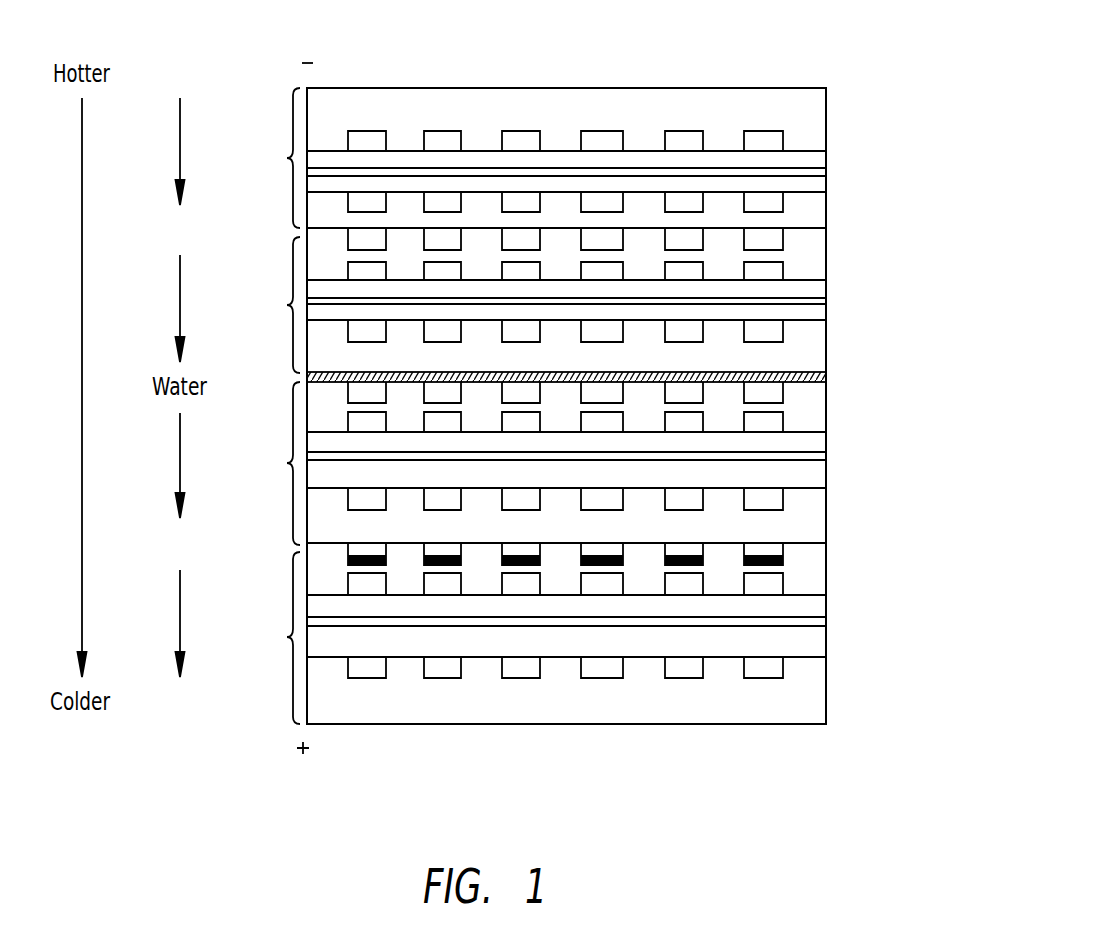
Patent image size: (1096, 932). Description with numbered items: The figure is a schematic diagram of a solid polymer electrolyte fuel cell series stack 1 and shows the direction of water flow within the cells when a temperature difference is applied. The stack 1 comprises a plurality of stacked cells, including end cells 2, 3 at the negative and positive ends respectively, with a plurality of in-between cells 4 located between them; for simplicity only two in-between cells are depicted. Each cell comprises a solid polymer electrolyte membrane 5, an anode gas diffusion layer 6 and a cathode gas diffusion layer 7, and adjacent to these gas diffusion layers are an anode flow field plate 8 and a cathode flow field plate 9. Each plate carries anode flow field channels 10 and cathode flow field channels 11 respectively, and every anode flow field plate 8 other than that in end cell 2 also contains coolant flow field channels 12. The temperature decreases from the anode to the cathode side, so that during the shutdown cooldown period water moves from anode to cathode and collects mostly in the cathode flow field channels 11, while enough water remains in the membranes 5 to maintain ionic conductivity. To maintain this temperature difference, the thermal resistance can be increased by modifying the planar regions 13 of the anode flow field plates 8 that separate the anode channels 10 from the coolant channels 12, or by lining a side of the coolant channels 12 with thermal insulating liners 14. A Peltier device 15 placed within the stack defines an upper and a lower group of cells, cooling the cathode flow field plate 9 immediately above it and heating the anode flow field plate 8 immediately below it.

The stack 1 is at (863, 53).
The end cell 2 is at (286, 158).
The end cell 3 is at (283, 638).
The cells 4 is at (286, 391).
The solid polymer electrolyte membrane 5 is at (818, 175).
The anode gas diffusion layer 6 is at (818, 160).
The cathode gas diffusion layer 7 is at (818, 190).
The anode flow field plate 8 is at (818, 120).
The cathode flow field plate 9 is at (818, 213).
The anode flow field channels 10 is at (685, 138).
The cathode flow field channels 11 is at (612, 205).
The coolant flow field channels 12 is at (525, 238).
The planar regions 13 is at (788, 258).
The thermal insulating liners 14 is at (523, 560).
The Peltier device 15 is at (818, 377).